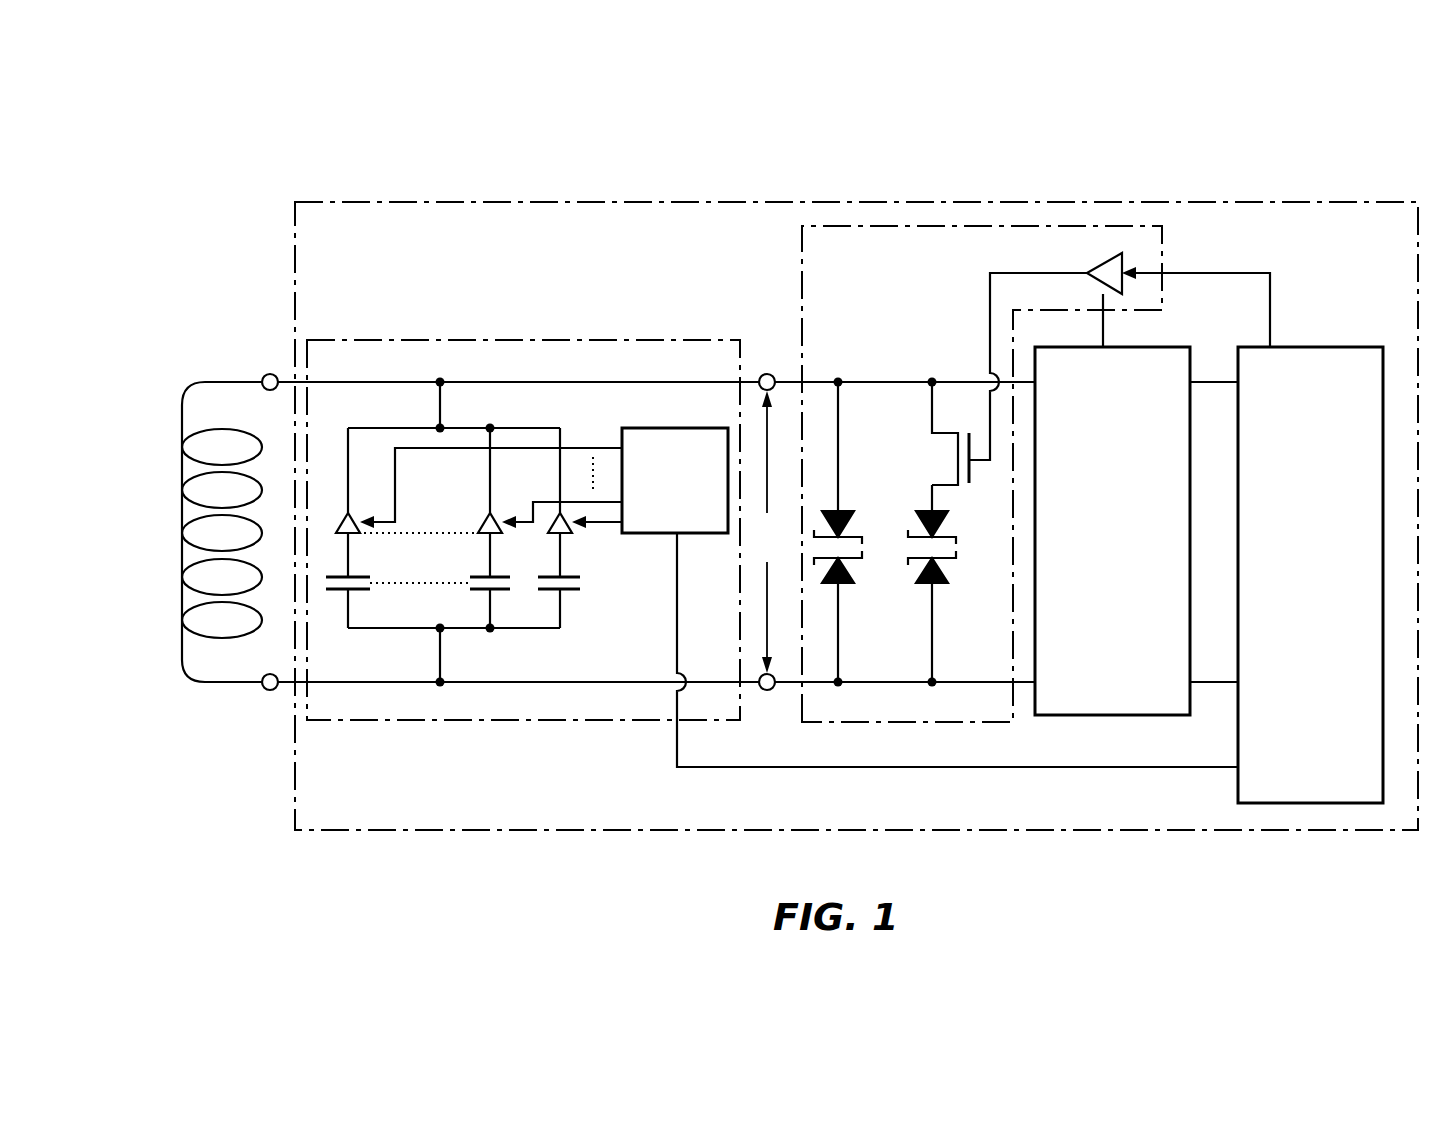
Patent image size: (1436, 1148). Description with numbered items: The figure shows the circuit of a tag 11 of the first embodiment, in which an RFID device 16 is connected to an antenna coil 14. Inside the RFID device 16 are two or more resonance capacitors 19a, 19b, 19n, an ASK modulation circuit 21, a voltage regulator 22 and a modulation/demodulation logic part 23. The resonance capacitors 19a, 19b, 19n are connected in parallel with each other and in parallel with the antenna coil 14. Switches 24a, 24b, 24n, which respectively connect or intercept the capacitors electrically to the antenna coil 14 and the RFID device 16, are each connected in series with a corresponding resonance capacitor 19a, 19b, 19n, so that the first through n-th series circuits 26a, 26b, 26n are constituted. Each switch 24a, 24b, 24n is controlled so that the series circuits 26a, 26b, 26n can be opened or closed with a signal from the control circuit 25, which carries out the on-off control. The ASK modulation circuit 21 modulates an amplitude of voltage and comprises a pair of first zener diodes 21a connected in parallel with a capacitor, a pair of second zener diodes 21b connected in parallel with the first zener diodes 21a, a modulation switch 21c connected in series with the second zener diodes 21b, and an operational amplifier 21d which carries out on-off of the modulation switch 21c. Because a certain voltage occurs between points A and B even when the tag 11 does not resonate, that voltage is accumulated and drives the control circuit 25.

The tag 11 is at (352, 185).
The antenna coil 14 is at (183, 412).
The RFID device 16 is at (503, 196).
The resonance capacitor 19a is at (580, 590).
The resonance capacitor 19b is at (470, 590).
The resonance capacitor 19n is at (332, 591).
The ASK modulation circuit 21 is at (790, 275).
The first zener diode 21a is at (853, 537).
The second zener diode 21b is at (947, 537).
The modulation switch 21c is at (957, 462).
The operational amplifier 21d is at (1110, 255).
The voltage regulator 22 is at (1108, 715).
The modulation/demodulation logic part 23 is at (1312, 803).
The switch 24a is at (572, 530).
The switch 24b is at (478, 522).
The switch 24n is at (362, 530).
The control circuit 25 is at (638, 427).
The first series circuit 26a is at (566, 472).
The second series circuit 26b is at (482, 450).
The n-th series circuit 26n is at (348, 458).